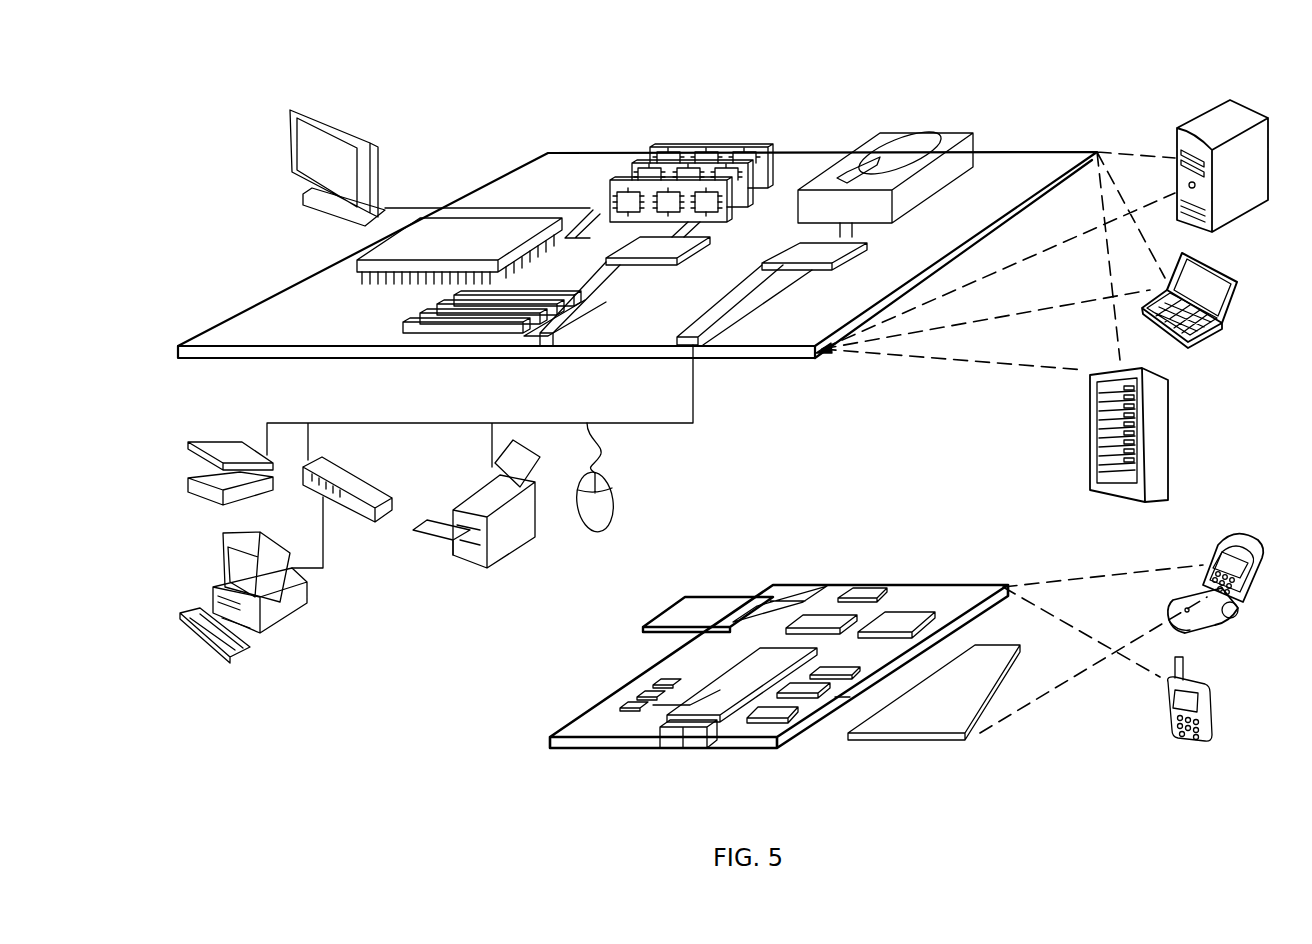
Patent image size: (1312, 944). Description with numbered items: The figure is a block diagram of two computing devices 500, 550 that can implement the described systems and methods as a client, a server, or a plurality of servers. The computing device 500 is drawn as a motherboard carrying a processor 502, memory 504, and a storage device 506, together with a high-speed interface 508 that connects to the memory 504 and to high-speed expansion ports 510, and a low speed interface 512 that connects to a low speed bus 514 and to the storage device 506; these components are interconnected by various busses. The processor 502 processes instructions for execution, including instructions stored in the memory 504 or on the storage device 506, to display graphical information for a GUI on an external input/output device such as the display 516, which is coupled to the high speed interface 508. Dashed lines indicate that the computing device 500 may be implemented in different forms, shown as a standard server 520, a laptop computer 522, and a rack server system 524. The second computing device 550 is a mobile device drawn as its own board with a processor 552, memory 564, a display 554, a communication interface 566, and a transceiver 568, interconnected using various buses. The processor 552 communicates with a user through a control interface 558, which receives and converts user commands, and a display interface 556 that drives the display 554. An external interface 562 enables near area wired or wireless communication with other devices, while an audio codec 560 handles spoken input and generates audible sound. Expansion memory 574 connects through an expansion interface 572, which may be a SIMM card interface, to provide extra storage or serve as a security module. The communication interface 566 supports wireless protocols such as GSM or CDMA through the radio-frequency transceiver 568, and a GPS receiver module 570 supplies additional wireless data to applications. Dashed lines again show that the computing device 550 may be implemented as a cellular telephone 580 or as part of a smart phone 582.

The computing device 500 is at (475, 124).
The processor 502 is at (357, 264).
The memory 504 is at (660, 150).
The storage device 506 is at (880, 135).
The high-speed interface 508 is at (635, 248).
The high-speed expansion ports 510 is at (405, 327).
The low speed interface 512 is at (800, 250).
The low speed bus 514 is at (710, 350).
The display 516 is at (291, 108).
The standard server 520 is at (1177, 132).
The laptop computer 522 is at (1237, 280).
The rack server system 524 is at (1090, 455).
The computing device 550 is at (524, 751).
The processor 552 is at (722, 722).
The display 554 is at (945, 725).
The display interface 556 is at (773, 723).
The control interface 558 is at (800, 700).
The audio codec 560 is at (832, 693).
The external interface 562 is at (683, 749).
The memory 564 is at (642, 700).
The communication interface 566 is at (826, 625).
The transceiver 568 is at (898, 620).
The GPS receiver module 570 is at (868, 590).
The expansion interface 572 is at (753, 596).
The expansion memory 574 is at (688, 597).
The cellular telephone 580 is at (1223, 548).
The smart phone 582 is at (1167, 706).